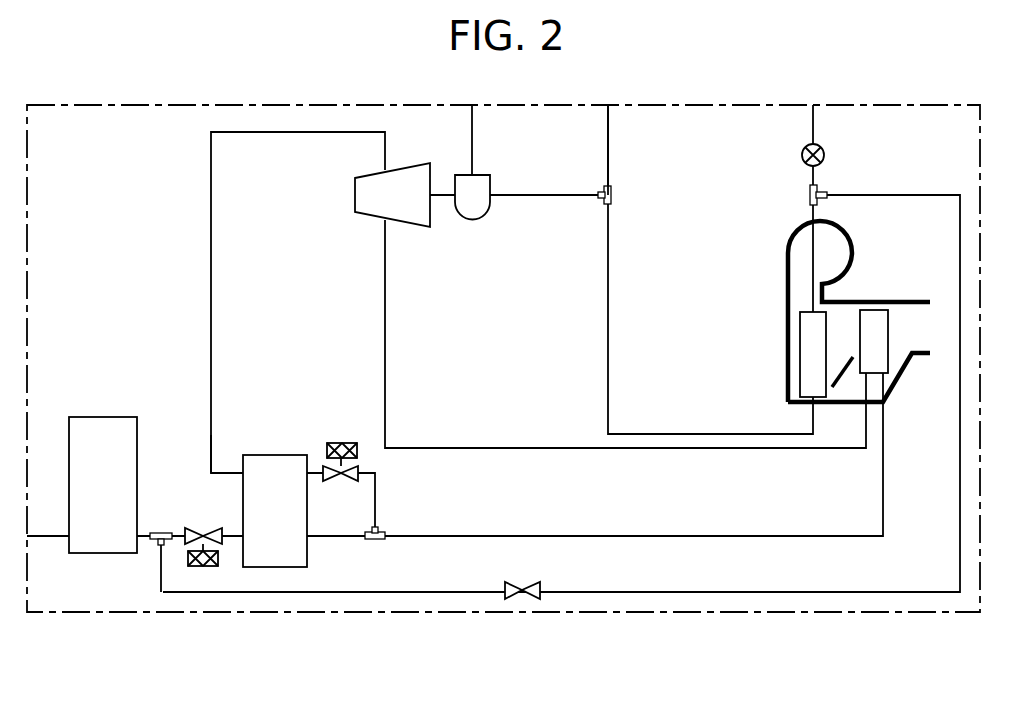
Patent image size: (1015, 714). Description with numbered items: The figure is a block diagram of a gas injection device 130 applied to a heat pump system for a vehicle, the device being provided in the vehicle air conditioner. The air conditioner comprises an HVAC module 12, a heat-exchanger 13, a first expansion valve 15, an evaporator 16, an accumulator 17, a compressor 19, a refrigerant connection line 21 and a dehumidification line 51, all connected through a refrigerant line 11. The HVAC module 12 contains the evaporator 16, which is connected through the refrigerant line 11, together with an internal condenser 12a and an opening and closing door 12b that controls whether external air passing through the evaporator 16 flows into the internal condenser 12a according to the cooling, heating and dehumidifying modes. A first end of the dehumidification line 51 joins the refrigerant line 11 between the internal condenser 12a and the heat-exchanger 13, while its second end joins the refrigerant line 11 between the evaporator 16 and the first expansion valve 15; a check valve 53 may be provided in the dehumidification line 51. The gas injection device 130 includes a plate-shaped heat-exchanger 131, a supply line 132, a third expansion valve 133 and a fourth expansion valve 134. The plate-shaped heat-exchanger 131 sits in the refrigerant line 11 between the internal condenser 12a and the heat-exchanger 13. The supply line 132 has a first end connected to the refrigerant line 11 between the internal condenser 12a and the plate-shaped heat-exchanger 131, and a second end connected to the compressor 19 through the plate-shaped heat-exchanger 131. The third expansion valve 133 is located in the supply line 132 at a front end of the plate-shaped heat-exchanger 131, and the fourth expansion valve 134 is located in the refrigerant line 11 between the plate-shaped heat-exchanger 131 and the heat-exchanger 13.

The refrigerant line 11 is at (511, 197).
The HVAC module 12 is at (780, 228).
The internal condenser 12a is at (888, 325).
The opening and closing door 12b is at (844, 380).
The heat-exchanger 13 is at (137, 486).
The first expansion valve 15 is at (825, 155).
The evaporator 16 is at (800, 354).
The accumulator 17 is at (482, 177).
The compressor 19 is at (355, 198).
The refrigerant connection line 21 is at (610, 143).
The dehumidification line 51 is at (713, 591).
The check valve 53 is at (516, 587).
The gas injection device 130 is at (284, 569).
The plate-shaped heat-exchanger 131 is at (292, 567).
The supply line 132 is at (212, 437).
The third expansion valve 133 is at (341, 481).
The fourth expansion valve 134 is at (205, 567).